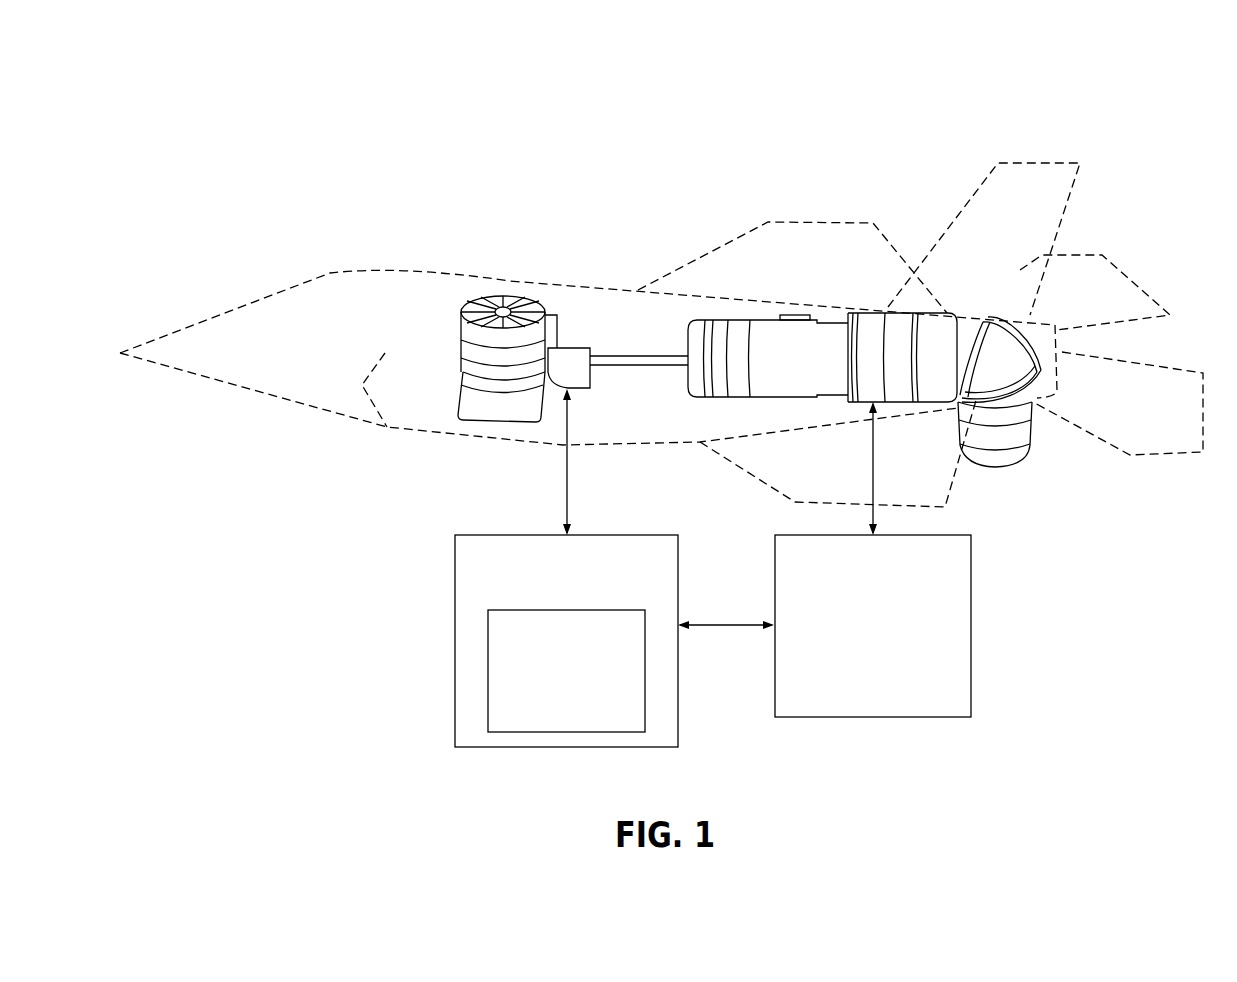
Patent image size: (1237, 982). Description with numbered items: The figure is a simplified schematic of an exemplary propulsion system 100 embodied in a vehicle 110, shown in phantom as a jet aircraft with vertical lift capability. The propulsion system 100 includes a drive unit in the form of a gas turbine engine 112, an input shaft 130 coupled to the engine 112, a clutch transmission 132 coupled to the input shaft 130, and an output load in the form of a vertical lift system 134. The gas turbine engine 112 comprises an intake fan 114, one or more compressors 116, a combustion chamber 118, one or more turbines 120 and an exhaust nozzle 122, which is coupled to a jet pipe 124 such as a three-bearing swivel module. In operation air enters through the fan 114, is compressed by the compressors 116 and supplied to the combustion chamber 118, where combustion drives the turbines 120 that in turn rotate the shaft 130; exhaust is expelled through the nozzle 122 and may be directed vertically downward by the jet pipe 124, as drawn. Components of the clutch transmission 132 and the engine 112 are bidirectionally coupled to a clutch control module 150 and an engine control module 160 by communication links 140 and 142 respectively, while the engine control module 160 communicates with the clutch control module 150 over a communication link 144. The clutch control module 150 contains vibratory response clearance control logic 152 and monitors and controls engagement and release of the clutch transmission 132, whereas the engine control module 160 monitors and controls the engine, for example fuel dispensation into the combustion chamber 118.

The propulsion system 100 is at (1080, 124).
The vehicle 110 is at (402, 179).
The gas turbine engine 112 is at (902, 209).
The intake fan 114 is at (710, 320).
The compressor 116 is at (765, 337).
The combustion chamber 118 is at (895, 323).
The turbine 120 is at (938, 333).
The exhaust nozzle 122 is at (1012, 440).
The jet pipe 124 is at (1030, 405).
The input shaft 130 is at (638, 357).
The clutch transmission 132 is at (570, 355).
The vertical lift system 134 is at (513, 313).
The communication link 140 is at (568, 490).
The communication link 142 is at (875, 475).
The communication link 144 is at (717, 620).
The clutch control module 150 is at (512, 535).
The vibratory response clearance control logic 152 is at (555, 733).
The engine control module 160 is at (865, 718).